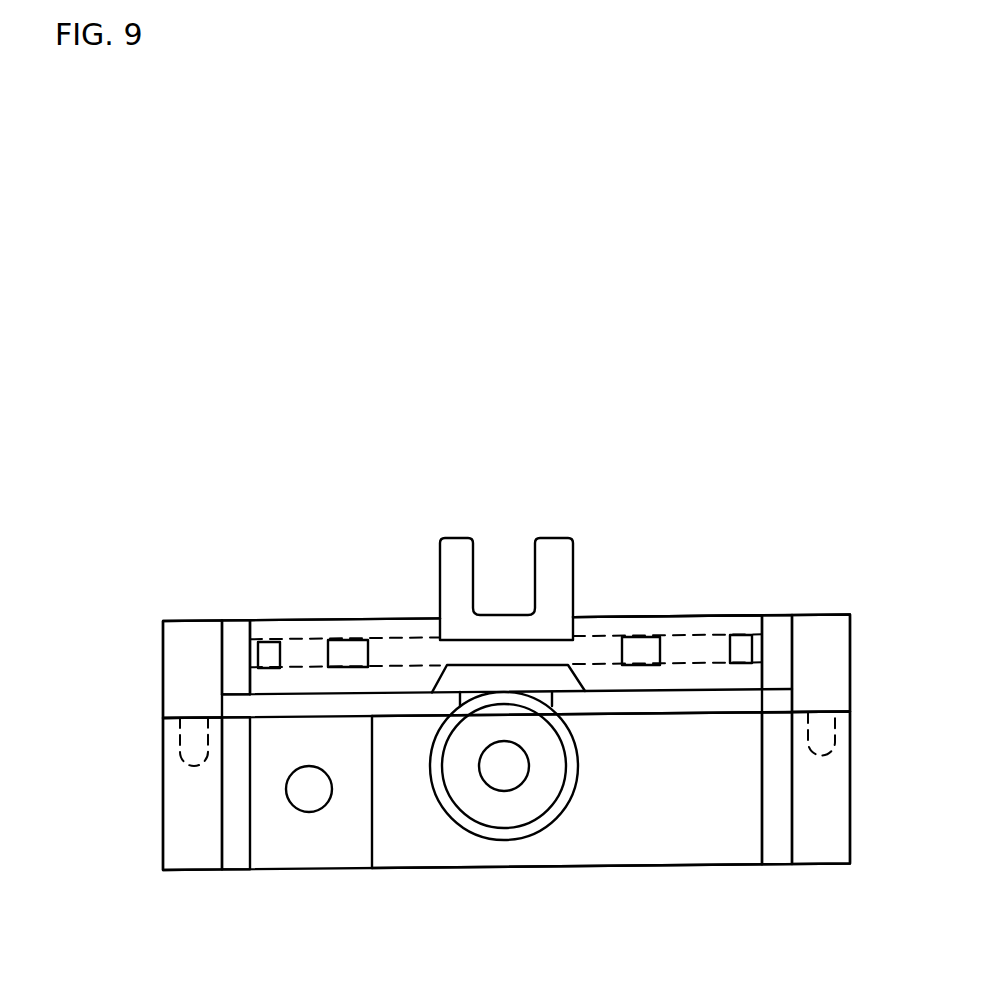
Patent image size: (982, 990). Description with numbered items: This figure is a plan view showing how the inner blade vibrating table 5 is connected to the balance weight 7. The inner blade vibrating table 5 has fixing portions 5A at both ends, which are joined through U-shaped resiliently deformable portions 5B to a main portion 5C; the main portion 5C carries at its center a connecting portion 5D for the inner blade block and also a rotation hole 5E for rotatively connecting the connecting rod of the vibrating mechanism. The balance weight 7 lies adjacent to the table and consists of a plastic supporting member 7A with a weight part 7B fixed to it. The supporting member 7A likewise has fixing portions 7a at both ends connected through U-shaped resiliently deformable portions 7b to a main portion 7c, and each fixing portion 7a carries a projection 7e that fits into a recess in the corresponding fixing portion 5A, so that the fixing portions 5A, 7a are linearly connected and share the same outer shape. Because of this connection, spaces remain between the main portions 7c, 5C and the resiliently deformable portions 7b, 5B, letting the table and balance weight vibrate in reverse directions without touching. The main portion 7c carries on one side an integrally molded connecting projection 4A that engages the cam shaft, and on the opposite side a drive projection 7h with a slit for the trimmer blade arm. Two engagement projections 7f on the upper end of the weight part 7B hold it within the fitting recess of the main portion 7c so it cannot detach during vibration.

The inner blade vibrating table 5 is at (665, 888).
The fixing portions 5A is at (192, 865).
The resiliently deformable portions 5B is at (226, 850).
The main portion 5C is at (580, 855).
The connecting portion 5D is at (502, 815).
The rotation hole 5E is at (311, 797).
The balance weight 7 is at (590, 598).
The fixing portions 7a is at (182, 633).
The resiliently deformable portions 7b is at (782, 645).
The supporting member 7A is at (270, 610).
The weight part 7B is at (355, 645).
The main portion 7c is at (700, 620).
The projection 7e is at (180, 745).
The engagement projections 7f is at (272, 657).
The drive projection 7h is at (553, 545).
The connecting projection 4A is at (555, 702).